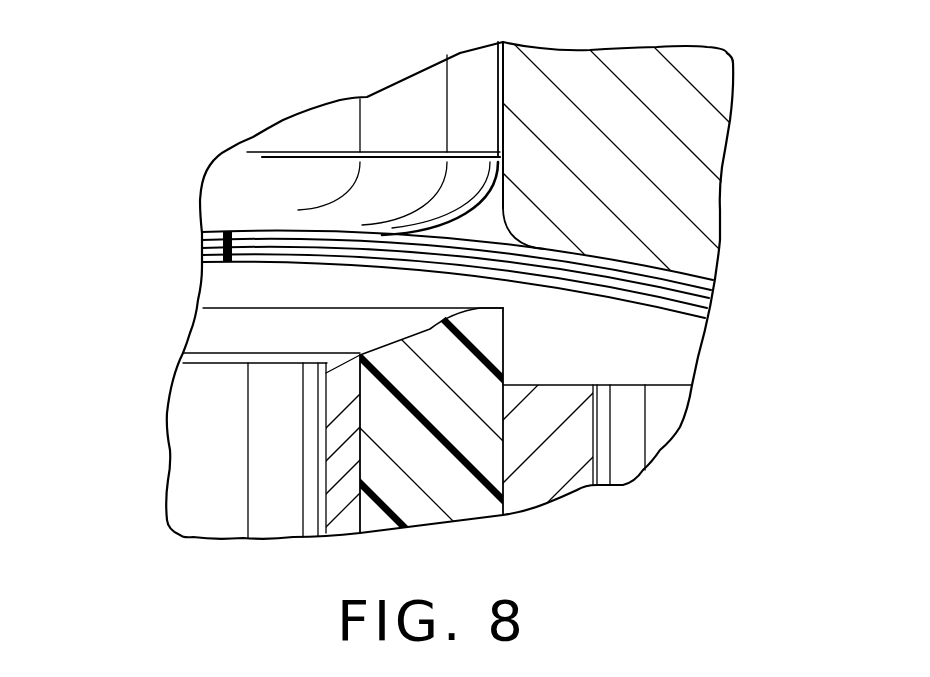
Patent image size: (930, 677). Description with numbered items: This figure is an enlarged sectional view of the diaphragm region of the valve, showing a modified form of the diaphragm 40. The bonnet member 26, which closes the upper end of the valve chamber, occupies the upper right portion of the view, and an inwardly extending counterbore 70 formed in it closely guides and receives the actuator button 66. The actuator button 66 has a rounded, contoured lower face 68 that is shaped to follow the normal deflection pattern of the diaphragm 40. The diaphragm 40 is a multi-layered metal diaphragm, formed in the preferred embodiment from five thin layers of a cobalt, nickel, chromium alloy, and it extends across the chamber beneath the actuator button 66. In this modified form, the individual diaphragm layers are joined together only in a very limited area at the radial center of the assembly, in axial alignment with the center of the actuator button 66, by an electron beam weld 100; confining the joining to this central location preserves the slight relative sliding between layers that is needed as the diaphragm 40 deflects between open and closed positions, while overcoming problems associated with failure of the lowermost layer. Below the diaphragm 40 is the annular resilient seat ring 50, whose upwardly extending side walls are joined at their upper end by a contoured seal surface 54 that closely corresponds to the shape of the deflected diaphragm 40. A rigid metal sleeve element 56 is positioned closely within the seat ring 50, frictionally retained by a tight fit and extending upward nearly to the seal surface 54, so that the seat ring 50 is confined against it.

The bonnet member 26 is at (668, 172).
The diaphragm member 40 is at (395, 225).
The seat ring 50 is at (452, 493).
The seal surface 54 is at (507, 313).
The sleeve element 56 is at (333, 502).
The actuator button 66 is at (337, 123).
The lower face 68 is at (262, 263).
The counterbore 70 is at (495, 93).
The electron beam weld 100 is at (223, 248).